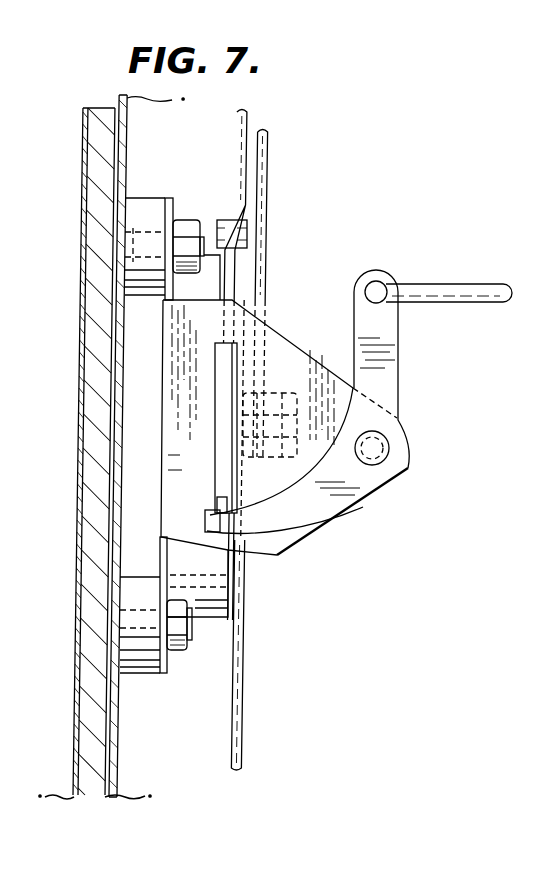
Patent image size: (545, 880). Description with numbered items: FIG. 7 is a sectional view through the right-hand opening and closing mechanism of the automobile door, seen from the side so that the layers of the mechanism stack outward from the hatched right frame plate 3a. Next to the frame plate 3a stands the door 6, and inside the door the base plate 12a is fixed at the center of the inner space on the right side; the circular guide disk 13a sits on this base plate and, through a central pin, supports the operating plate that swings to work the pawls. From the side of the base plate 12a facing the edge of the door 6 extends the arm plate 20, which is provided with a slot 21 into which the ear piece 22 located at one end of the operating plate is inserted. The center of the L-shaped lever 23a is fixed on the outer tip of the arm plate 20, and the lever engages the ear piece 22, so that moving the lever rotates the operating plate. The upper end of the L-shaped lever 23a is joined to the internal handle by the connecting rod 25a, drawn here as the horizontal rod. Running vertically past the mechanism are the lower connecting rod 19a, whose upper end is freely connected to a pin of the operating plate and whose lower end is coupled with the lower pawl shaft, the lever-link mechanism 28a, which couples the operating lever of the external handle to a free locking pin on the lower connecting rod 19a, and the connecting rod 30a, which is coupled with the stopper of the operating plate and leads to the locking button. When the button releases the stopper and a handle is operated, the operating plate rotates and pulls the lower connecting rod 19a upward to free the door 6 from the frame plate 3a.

The right frame plate 3a is at (93, 340).
The door 6 is at (123, 760).
The base plate 12a is at (170, 245).
The circular guide disk 13a is at (212, 275).
The lower connecting rod 19a is at (237, 722).
The arm plate 20 is at (268, 556).
The slot 21 is at (237, 370).
The ear piece 22 is at (205, 513).
The L-shaped lever 23a is at (398, 387).
The connecting rod 25a is at (463, 287).
The lever-link mechanism 28a is at (268, 142).
The connecting rod 30a is at (237, 117).